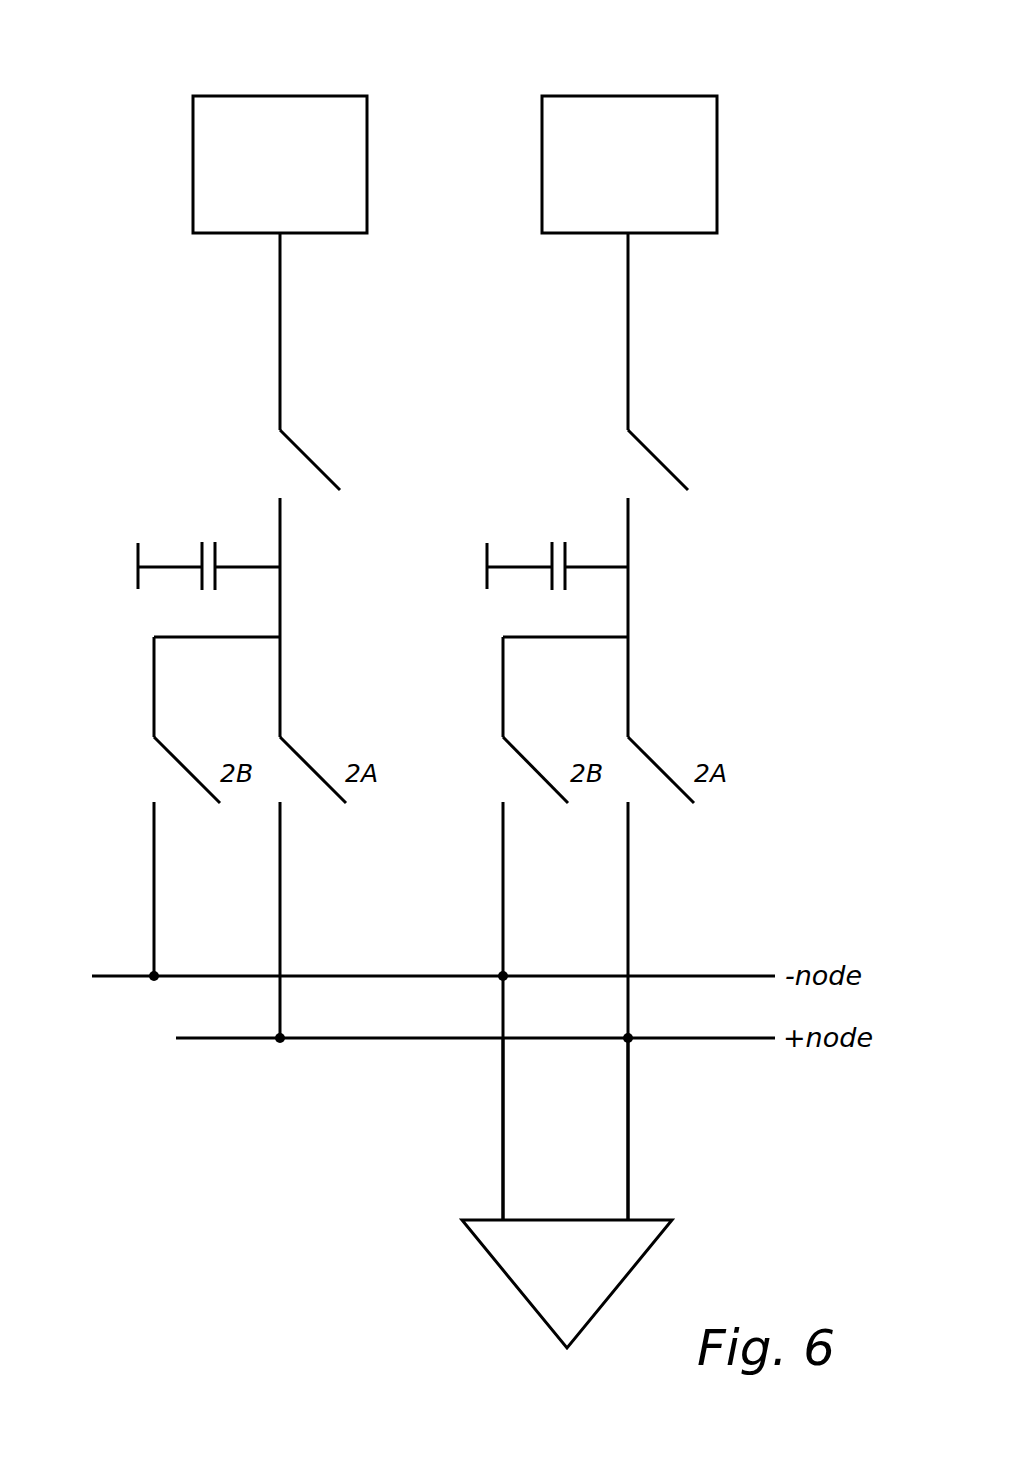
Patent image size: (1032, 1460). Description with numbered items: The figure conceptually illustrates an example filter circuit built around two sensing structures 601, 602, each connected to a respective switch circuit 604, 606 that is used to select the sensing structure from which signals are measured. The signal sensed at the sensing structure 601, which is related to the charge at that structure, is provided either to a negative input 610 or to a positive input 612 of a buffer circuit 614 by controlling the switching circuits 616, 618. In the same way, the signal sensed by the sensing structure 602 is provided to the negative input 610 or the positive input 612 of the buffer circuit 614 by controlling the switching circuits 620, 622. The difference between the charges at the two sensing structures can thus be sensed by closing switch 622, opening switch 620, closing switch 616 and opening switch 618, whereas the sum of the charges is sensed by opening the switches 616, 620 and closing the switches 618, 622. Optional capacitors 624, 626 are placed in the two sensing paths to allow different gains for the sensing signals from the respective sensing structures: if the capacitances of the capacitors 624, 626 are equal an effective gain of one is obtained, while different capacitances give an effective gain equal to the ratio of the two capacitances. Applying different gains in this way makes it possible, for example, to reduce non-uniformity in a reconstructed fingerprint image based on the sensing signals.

The sensing structure 601 is at (280, 95).
The sensing structure 602 is at (628, 95).
The switch circuit 604 is at (313, 462).
The switch circuit 606 is at (661, 462).
The negative input 610 is at (499, 1218).
The positive input 612 is at (633, 1218).
The buffer circuit 614 is at (458, 1284).
The switching circuit 616 is at (167, 751).
The switching circuit 618 is at (308, 762).
The switching circuit 620 is at (517, 751).
The switching circuit 622 is at (658, 762).
The capacitor 624 is at (199, 516).
The capacitor 626 is at (547, 516).